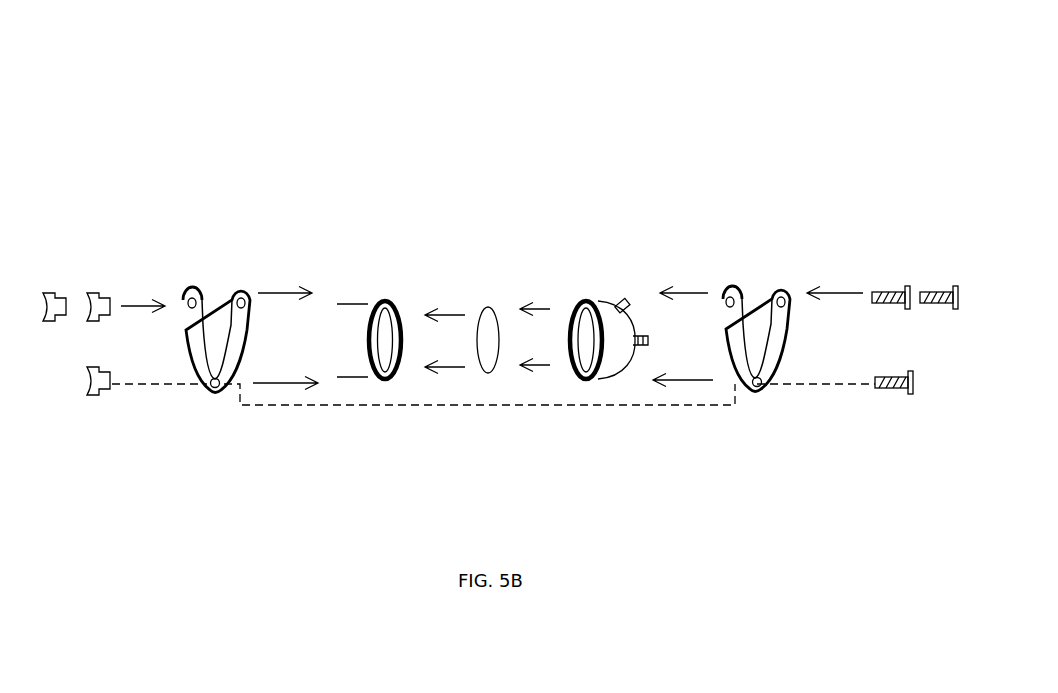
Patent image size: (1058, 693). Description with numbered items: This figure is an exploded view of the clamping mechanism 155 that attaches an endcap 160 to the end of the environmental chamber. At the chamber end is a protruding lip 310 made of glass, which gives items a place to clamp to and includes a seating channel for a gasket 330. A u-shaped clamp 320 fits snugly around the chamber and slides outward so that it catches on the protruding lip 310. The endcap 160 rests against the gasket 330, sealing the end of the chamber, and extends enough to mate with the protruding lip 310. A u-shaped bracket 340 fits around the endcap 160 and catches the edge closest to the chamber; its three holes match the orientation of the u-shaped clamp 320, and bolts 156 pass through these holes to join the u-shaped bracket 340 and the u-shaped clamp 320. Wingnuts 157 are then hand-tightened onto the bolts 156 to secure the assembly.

The clamping mechanism 155 is at (679, 420).
The bolts 156 is at (910, 392).
The wingnuts 157 is at (102, 393).
The endcap 160 is at (629, 300).
The protruding lip 310 is at (363, 314).
The u-shaped clamp 320 is at (240, 290).
The gasket 330 is at (480, 310).
The u-shaped bracket 340 is at (735, 288).